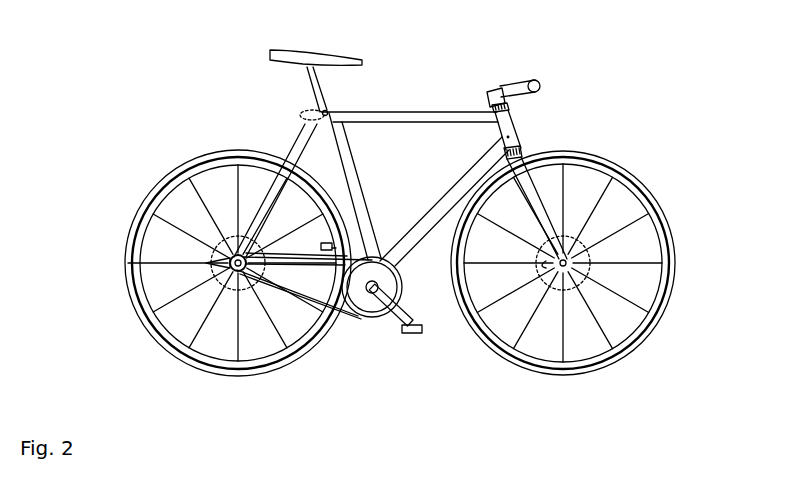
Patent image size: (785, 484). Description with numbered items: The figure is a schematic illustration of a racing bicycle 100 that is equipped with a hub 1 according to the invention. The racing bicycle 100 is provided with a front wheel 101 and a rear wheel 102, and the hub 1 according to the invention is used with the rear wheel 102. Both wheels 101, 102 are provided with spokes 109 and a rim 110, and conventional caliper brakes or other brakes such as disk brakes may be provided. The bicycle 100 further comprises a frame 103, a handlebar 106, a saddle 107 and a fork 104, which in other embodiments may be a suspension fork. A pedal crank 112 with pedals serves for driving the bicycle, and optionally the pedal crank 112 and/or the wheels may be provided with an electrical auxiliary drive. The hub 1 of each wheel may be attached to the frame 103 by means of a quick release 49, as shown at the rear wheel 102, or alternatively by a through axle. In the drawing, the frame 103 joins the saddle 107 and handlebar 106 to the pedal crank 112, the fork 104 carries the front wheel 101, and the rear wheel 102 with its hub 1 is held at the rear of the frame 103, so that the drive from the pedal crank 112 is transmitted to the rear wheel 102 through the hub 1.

The racing bicycle 100 is at (157, 79).
The front wheel 101 is at (650, 192).
The rear wheel 102 is at (150, 197).
The frame 103 is at (417, 113).
The fork 104 is at (530, 190).
The handlebar 106 is at (517, 79).
The saddle 107 is at (303, 66).
The spokes 109 is at (645, 267).
The rim 110 is at (655, 298).
The pedal crank 112 is at (386, 239).
The quick release 49 is at (213, 265).
The hub 1 is at (249, 291).